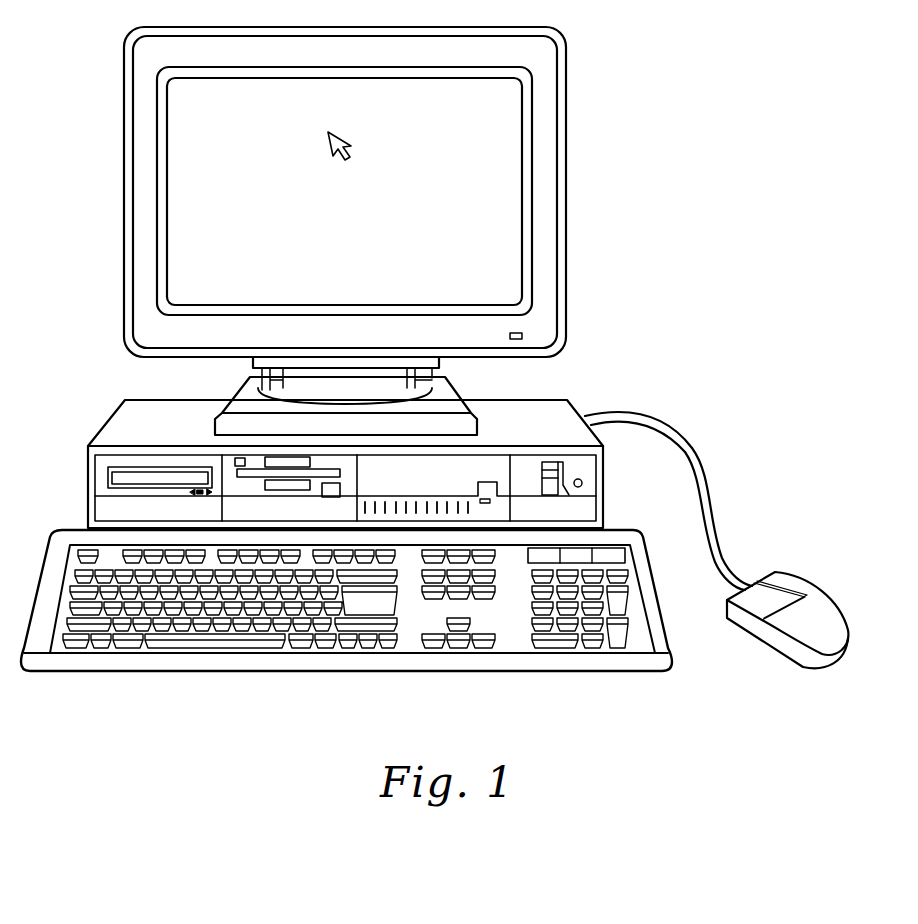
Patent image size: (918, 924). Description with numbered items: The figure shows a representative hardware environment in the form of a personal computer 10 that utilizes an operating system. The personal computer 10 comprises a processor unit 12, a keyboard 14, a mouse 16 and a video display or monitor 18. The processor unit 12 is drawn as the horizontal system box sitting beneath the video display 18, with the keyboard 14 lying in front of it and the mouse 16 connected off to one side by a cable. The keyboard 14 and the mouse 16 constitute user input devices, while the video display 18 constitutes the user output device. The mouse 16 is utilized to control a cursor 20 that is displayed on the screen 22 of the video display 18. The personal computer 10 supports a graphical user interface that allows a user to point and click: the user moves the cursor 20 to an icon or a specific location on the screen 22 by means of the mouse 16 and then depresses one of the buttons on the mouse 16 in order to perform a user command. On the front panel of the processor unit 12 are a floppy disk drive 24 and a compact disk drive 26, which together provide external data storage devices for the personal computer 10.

The personal computer 10 is at (726, 265).
The processor unit 12 is at (107, 424).
The keyboard 14 is at (196, 670).
The mouse 16 is at (802, 582).
The video display 18 is at (566, 180).
The cursor 20 is at (337, 138).
The screen 22 is at (361, 232).
The floppy disk drive 24 is at (354, 473).
The compact disk drive 26 is at (107, 478).